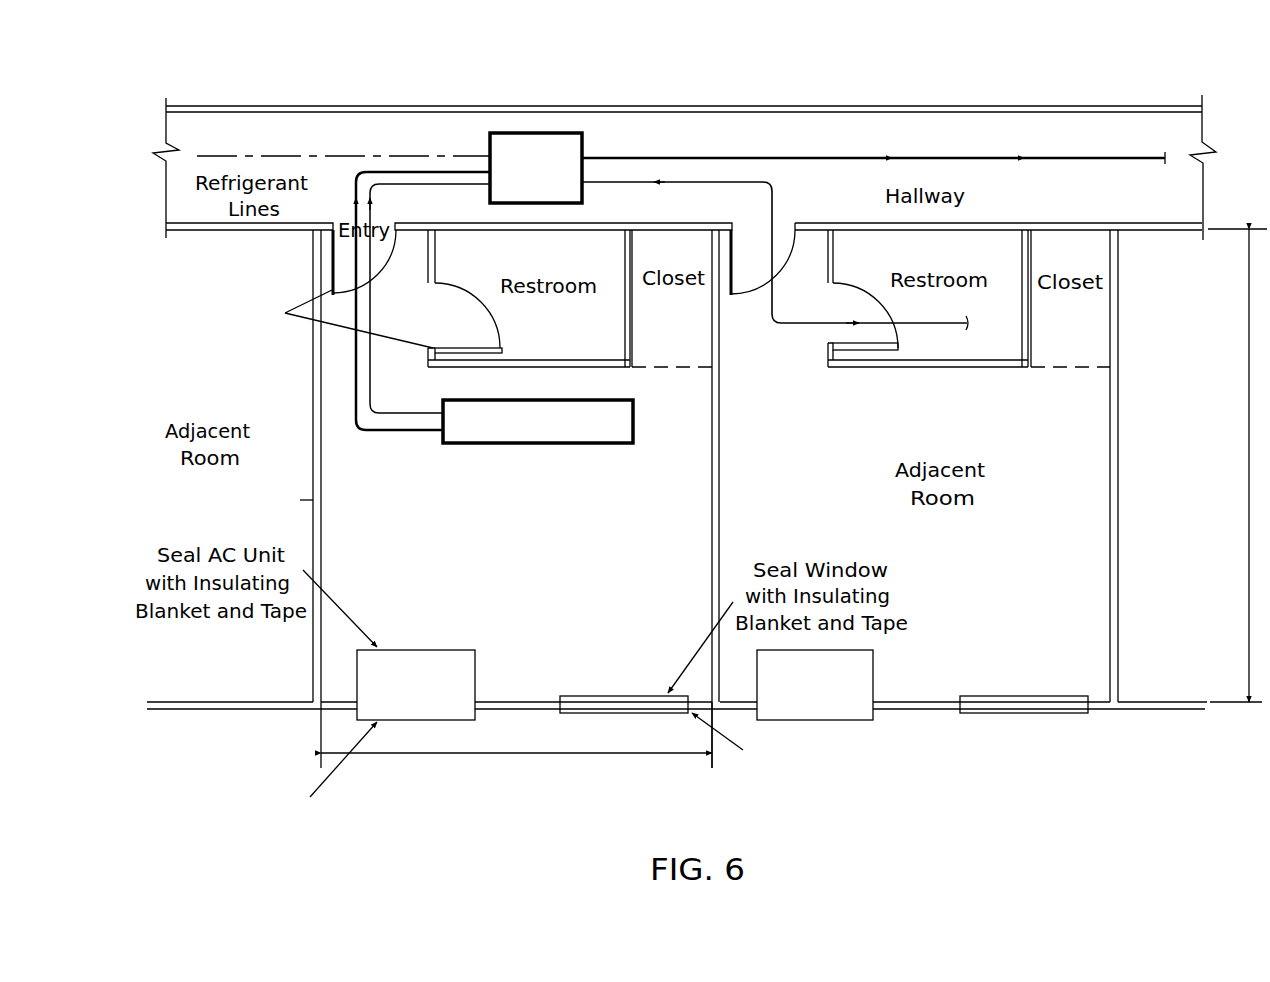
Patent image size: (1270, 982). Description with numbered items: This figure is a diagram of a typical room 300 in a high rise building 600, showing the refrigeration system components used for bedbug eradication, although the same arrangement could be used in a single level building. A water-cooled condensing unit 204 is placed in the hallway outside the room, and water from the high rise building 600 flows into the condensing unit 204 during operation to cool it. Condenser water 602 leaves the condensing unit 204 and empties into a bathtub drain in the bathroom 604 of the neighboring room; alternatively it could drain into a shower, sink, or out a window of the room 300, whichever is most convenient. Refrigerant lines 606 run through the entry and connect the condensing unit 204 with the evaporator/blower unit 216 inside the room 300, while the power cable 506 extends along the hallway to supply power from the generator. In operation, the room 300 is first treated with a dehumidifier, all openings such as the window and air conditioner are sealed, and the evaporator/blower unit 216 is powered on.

The condensing unit 204 is at (568, 132).
The evaporator/blower unit 216 is at (500, 445).
The room 300 is at (622, 520).
The power cable 506 is at (215, 157).
The high rise building 600 is at (1023, 158).
The condenser water 602 is at (820, 327).
The bathroom 604 is at (973, 330).
The refrigerant lines 606 is at (356, 185).